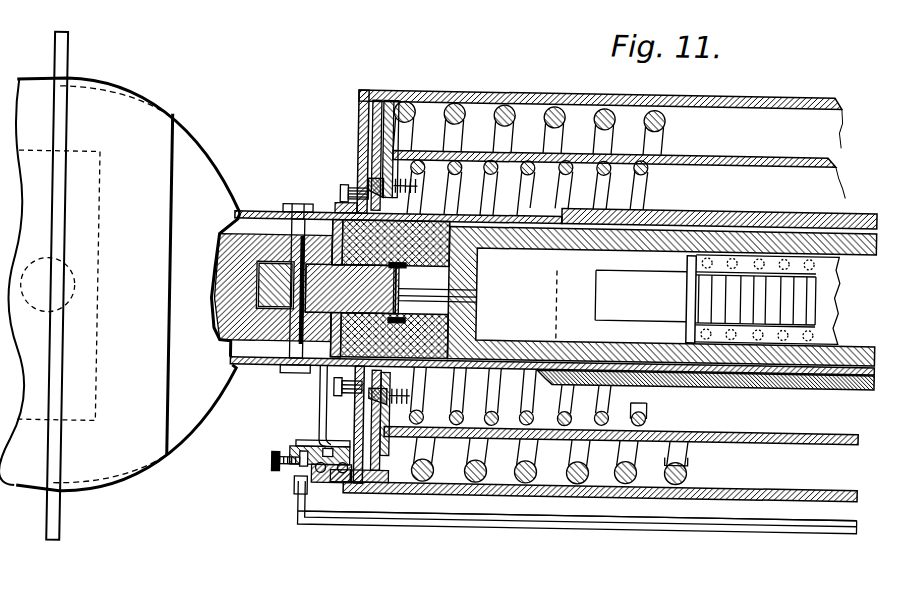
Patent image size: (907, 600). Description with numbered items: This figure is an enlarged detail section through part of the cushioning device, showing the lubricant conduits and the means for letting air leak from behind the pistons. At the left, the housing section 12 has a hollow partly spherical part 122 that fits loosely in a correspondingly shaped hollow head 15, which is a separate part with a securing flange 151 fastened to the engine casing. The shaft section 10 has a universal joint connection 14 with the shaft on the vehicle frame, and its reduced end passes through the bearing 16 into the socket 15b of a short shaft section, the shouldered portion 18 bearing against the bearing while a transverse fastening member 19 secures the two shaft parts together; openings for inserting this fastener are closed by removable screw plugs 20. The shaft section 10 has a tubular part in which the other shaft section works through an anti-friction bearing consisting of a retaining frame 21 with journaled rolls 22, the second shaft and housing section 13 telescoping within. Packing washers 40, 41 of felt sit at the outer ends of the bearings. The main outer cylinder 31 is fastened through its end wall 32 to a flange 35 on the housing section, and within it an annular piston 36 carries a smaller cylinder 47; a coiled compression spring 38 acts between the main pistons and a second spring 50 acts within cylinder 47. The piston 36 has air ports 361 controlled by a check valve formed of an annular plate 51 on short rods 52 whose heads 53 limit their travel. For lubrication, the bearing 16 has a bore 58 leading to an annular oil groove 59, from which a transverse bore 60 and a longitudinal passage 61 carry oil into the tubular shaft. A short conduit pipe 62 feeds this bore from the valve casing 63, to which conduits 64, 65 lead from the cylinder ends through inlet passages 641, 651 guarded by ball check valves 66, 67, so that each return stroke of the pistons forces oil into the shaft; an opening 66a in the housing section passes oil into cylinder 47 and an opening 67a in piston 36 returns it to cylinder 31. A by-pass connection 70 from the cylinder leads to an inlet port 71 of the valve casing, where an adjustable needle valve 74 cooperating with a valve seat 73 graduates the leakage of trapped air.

The shaft section 10 is at (597, 282).
The housing section 12 is at (256, 212).
The partly spherical part 122 is at (226, 212).
The housing section 13 is at (703, 205).
The universal joint connection 14 is at (99, 290).
The hollow head 15 is at (121, 285).
The securing flange 151 is at (66, 60).
The socket 15b is at (258, 287).
The bearing 16 is at (391, 243).
The shouldered portion 18 is at (480, 252).
The transverse fastening member 19 is at (218, 315).
The screw plugs 20 is at (294, 204).
The retaining frame 21 is at (688, 293).
The rolls 22 is at (838, 292).
The main outer cylinder 31 is at (822, 92).
The end wall 32 is at (357, 104).
The flange 35 is at (342, 192).
The annular piston 36 is at (388, 100).
The air ports 361 is at (389, 127).
The coiled compression spring 38 is at (664, 117).
The packing washer 40 is at (386, 244).
The packing washer 41 is at (360, 243).
The cylinder 47 is at (797, 150).
The coiled compression spring 50 is at (650, 168).
The annular plate 51 is at (372, 123).
The short rods 52 is at (375, 182).
The heads 53 is at (418, 186).
The bore 58 is at (389, 336).
The annular oil groove 59 is at (380, 289).
The transverse bore 60 is at (480, 300).
The longitudinal passage 61 is at (480, 288).
The short conduit pipe 62 is at (323, 399).
The valve casing 63 is at (300, 449).
The conduit 64 is at (390, 484).
The inlet passage 641 is at (360, 515).
The conduit 65 is at (602, 525).
The inlet passage 651 is at (300, 488).
The ball check valve 66 is at (326, 475).
The opening 66a is at (545, 380).
The ball check valve 67 is at (347, 476).
The opening 67a is at (430, 447).
The by-pass connection 70 is at (316, 441).
The inlet port 71 is at (300, 470).
The valve seat 73 is at (320, 447).
The adjustable needle valve 74 is at (276, 460).